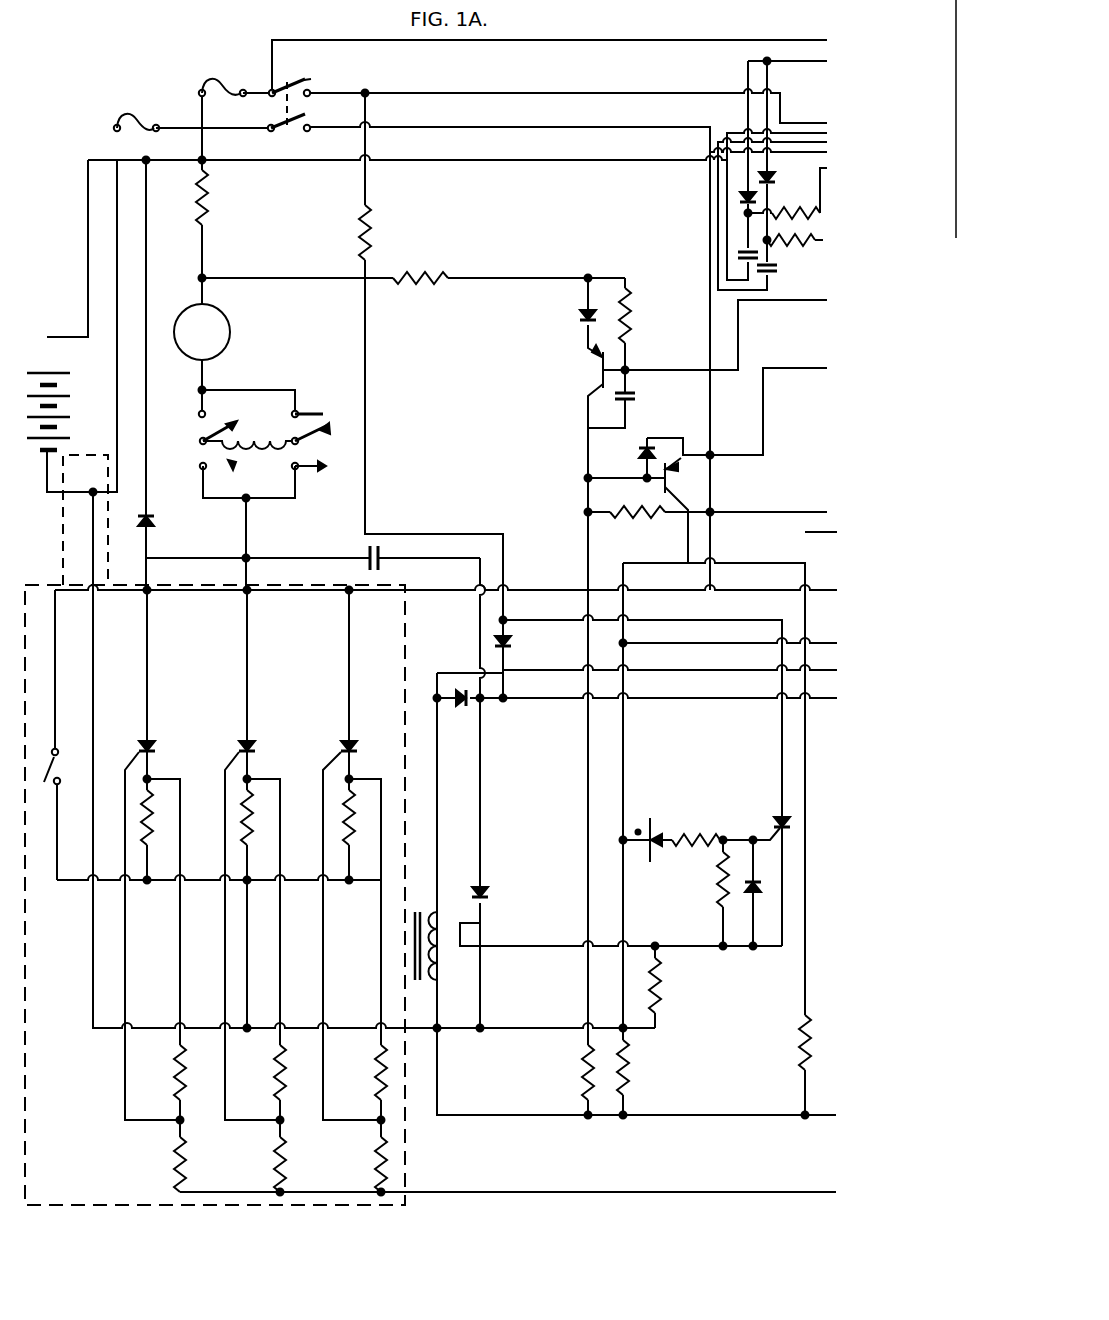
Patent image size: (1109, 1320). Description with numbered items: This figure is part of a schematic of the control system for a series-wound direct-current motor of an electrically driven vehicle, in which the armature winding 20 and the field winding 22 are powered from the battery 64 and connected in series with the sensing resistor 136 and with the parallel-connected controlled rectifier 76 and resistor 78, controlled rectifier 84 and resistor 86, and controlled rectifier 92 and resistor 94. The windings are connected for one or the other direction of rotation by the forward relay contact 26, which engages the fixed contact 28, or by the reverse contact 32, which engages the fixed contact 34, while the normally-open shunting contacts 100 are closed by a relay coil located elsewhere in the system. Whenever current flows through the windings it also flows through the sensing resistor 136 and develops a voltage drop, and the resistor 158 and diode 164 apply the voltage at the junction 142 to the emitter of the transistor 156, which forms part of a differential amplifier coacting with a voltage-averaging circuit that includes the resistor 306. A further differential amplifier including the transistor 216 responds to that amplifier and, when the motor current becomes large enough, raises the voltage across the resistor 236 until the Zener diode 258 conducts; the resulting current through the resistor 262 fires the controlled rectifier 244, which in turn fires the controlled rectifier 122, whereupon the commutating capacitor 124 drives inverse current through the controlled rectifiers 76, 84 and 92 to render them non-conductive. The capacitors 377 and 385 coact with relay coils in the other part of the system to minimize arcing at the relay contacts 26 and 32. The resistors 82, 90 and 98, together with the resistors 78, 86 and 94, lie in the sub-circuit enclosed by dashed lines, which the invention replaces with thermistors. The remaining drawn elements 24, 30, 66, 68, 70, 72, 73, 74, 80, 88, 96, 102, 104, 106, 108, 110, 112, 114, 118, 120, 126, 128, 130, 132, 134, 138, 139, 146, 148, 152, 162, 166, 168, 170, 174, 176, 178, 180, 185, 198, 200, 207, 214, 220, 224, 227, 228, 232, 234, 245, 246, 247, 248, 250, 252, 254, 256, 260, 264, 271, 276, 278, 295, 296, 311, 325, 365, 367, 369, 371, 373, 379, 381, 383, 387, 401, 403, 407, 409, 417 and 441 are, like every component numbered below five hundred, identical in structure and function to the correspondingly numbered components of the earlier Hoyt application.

The armature winding 20 is at (228, 320).
The field winding 22 is at (265, 432).
The relay contact arm 24 is at (238, 421).
The forward relay contact 26 is at (202, 441).
The fixed contact 28 is at (236, 466).
The relay contact arm 30 is at (324, 414).
The reverse contact 32 is at (329, 437).
The fixed contact 34 is at (326, 468).
The battery 64 is at (34, 458).
The switch 66 is at (286, 80).
The switch 68 is at (290, 136).
The ganged switch 70 is at (312, 82).
The switch 72 is at (129, 118).
The terminal 73 is at (834, 562).
The switch 74 is at (219, 84).
The controlled rectifier 76 is at (150, 740).
The resistor 78 is at (145, 831).
The resistor 80 is at (178, 1069).
The resistor 82 is at (174, 1160).
The controlled rectifier 84 is at (250, 740).
The resistor 86 is at (243, 831).
The resistor 88 is at (276, 1076).
The resistor 90 is at (276, 1158).
The controlled rectifier 92 is at (352, 740).
The resistor 94 is at (352, 850).
The resistor 96 is at (378, 1078).
The resistor 98 is at (374, 1158).
The shunting contacts 100 is at (46, 788).
The junction 102 is at (148, 594).
The junction 104 is at (248, 594).
The junction 106 is at (350, 594).
The conductor 108 is at (150, 884).
The conductor 110 is at (250, 884).
The junction 112 is at (248, 1032).
The junction 114 is at (93, 490).
The junction 118 is at (440, 1032).
The junction 120 is at (483, 1032).
The controlled rectifier 122 is at (486, 893).
The commutating capacitor 124 is at (380, 566).
The junction 126 is at (484, 704).
The junction 128 is at (248, 556).
The junction 130 is at (434, 700).
The transformer 132 is at (424, 984).
The diode 134 is at (463, 708).
The sensing resistor 136 is at (208, 196).
The junction 138 is at (147, 163).
The junction 139 is at (205, 158).
The junction 142 is at (205, 276).
The junction 146 is at (205, 388).
The junction 148 is at (243, 502).
The diode 152 is at (143, 524).
The transistor 156 is at (598, 370).
The resistor 158 is at (422, 266).
The junction 162 is at (590, 275).
The diode 164 is at (582, 306).
The junction 166 is at (586, 478).
The junction 168 is at (586, 512).
The resistor 170 is at (584, 1082).
The junction 174 is at (588, 1118).
The junction 176 is at (630, 367).
The capacitor 178 is at (640, 396).
The resistor 180 is at (632, 305).
The conductor 185 is at (627, 160).
The junction 198 is at (625, 1120).
The junction 200 is at (802, 1118).
The conductor 207 is at (92, 1026).
The conductor 214 is at (800, 304).
The transistor 216 is at (686, 468).
The conductor 220 is at (797, 372).
The junction 224 is at (370, 90).
The conductor 227 is at (808, 122).
The diode 228 is at (644, 456).
The junction 232 is at (626, 647).
The junction 234 is at (628, 846).
The resistor 236 is at (630, 1062).
The controlled rectifier 244 is at (776, 814).
The diode 245 is at (512, 650).
The junction 246 is at (506, 622).
The junction 247 is at (506, 702).
The resistor 248 is at (368, 215).
The junction 250 is at (655, 946).
The junction 252 is at (722, 950).
The junction 254 is at (754, 950).
The resistor 256 is at (660, 1003).
The Zener diode 258 is at (654, 818).
The resistor 260 is at (696, 834).
The resistor 262 is at (722, 888).
The diode 264 is at (760, 898).
The conductor 271 is at (778, 1196).
The junction 276 is at (383, 1196).
The junction 278 is at (282, 1196).
The conductor 295 is at (800, 534).
The resistor 296 is at (798, 1028).
The resistor 306 is at (636, 520).
The conductor 311 is at (804, 510).
The conductor 325 is at (818, 38).
The conductor 365 is at (826, 62).
The junction 367 is at (767, 60).
The diode 369 is at (740, 198).
The diode 371 is at (775, 178).
The junction 373 is at (740, 214).
The capacitor 377 is at (740, 256).
The conductor 379 is at (727, 180).
The junction 381 is at (770, 245).
The conductor 383 is at (731, 672).
The capacitor 385 is at (780, 270).
The conductor 387 is at (718, 130).
The resistor 401 is at (818, 210).
The resistor 403 is at (812, 252).
The conductor 407 is at (826, 172).
The conductor 409 is at (821, 241).
The conductor 417 is at (820, 702).
The conductor 441 is at (746, 590).